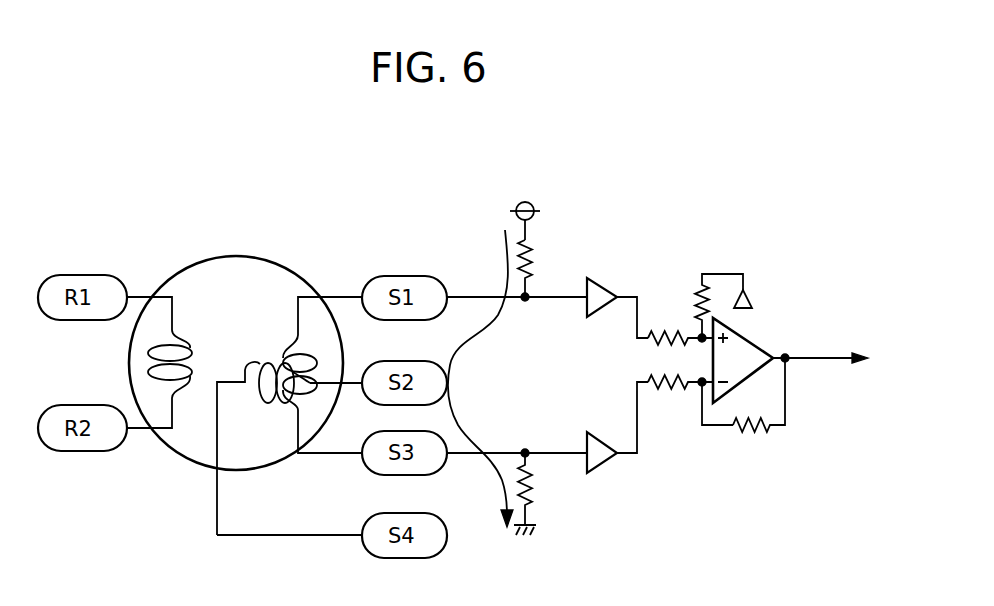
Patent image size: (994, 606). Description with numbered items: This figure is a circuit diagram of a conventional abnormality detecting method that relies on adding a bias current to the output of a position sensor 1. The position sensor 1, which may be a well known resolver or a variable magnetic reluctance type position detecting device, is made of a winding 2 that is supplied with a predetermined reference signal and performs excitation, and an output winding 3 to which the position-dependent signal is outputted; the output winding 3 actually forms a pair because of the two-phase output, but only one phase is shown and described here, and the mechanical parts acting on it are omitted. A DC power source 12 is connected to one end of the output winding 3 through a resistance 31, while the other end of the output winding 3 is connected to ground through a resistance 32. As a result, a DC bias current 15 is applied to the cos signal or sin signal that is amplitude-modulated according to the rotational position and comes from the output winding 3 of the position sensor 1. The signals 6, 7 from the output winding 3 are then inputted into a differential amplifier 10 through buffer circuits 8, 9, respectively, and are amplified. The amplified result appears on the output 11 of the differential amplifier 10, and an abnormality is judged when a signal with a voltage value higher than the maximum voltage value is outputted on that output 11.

The position sensor 1 is at (268, 258).
The winding 2 is at (170, 390).
The output winding 3 is at (255, 395).
The signal 6 is at (477, 297).
The signal 7 is at (473, 453).
The buffer circuit 8 is at (604, 283).
The buffer circuit 9 is at (605, 465).
The differential amplifier 10 is at (733, 396).
The output line 11 is at (827, 362).
The DC power source 12 is at (531, 204).
The DC bias current 15 is at (460, 353).
The resistance 31 is at (535, 262).
The resistance 32 is at (535, 487).